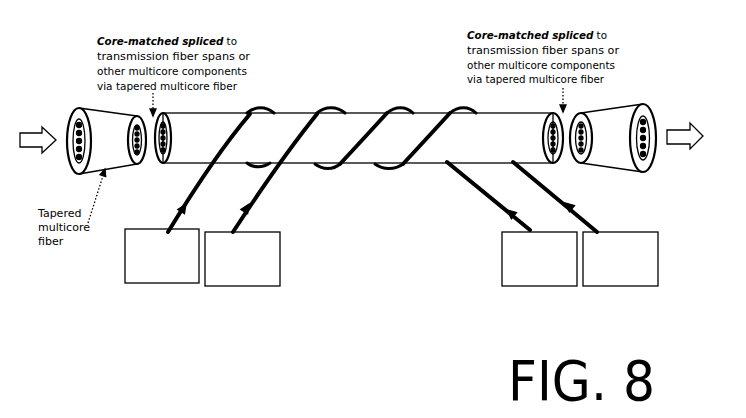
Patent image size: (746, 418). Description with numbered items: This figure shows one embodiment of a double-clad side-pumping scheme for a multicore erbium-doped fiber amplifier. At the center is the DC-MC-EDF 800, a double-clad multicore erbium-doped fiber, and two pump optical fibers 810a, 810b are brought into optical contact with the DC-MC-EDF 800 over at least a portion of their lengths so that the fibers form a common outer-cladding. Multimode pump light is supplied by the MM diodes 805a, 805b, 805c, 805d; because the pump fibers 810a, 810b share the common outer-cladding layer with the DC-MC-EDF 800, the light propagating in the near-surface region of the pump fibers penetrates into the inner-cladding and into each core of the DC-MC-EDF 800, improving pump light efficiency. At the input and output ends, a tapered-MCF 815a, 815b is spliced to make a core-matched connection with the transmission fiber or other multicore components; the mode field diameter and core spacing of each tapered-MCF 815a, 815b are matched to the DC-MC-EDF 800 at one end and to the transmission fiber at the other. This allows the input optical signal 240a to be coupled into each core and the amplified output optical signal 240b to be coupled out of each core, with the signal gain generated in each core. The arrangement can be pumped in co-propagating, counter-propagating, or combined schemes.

The DC-MC-EDF 800 is at (222, 113).
The MM diode 805a is at (155, 283).
The MM diode 805b is at (257, 286).
The MM diode 805c is at (520, 286).
The MM diode 805d is at (623, 286).
The pump optical fiber 810a is at (187, 197).
The pump optical fiber 810b is at (262, 186).
The tapered-MCF 815a is at (98, 113).
The tapered-MCF 815b is at (618, 105).
The optical signal 240a is at (25, 137).
The optical signal 240b is at (704, 137).